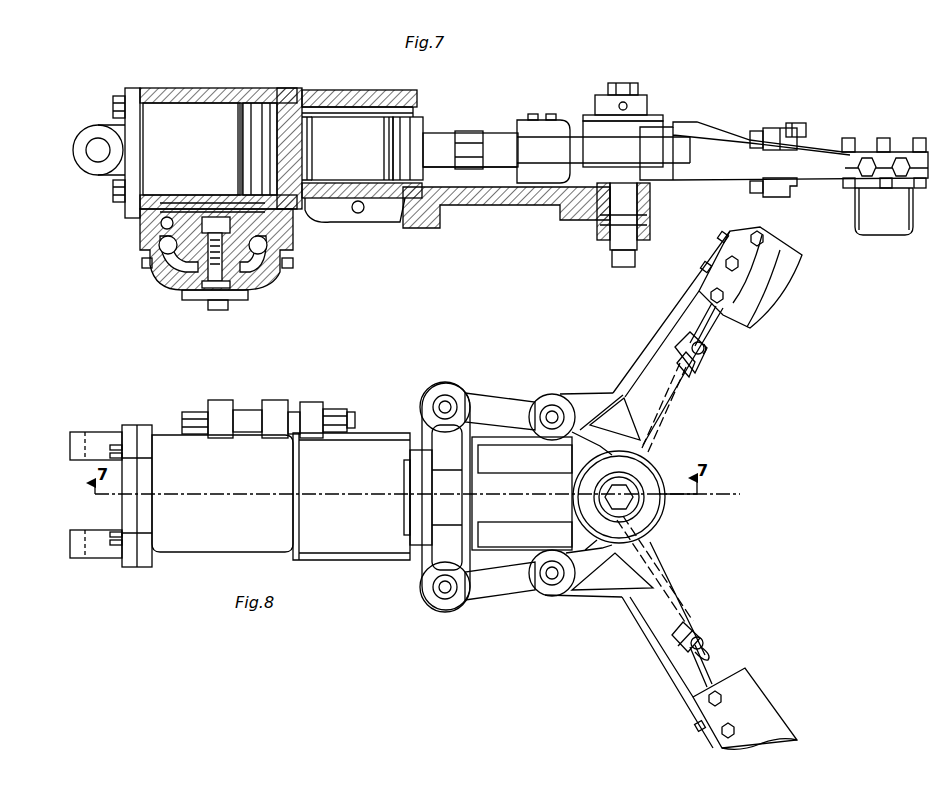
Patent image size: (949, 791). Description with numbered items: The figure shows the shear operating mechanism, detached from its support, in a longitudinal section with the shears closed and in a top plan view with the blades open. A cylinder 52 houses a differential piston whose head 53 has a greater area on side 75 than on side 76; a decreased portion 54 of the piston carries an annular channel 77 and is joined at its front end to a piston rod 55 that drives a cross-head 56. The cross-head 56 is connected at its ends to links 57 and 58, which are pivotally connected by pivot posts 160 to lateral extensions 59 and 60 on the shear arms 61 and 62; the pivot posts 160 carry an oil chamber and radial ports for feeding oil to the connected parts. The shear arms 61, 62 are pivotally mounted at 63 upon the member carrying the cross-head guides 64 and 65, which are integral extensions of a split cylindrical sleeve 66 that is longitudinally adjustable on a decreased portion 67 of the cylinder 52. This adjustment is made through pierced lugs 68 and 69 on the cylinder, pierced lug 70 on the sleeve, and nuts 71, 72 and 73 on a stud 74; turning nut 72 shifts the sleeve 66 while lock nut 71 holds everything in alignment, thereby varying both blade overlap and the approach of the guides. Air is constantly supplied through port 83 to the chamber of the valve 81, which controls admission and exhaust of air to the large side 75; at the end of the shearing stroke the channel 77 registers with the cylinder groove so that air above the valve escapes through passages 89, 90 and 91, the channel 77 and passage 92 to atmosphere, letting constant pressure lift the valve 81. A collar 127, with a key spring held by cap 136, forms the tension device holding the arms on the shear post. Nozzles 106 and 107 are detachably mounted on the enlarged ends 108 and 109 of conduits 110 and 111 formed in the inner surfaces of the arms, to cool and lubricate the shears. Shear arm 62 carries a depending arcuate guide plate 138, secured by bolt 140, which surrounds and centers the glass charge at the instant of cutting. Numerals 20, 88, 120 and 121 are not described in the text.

In FIG. 7, the eye / mounting lug 20 is at (90, 170).
In FIG. 8, the eye / mounting lug 20 is at (100, 537).
In FIG. 7, the cylinder 52 is at (190, 115).
In FIG. 8, the cylinder 52 is at (205, 538).
In FIG. 7, the piston head 53 is at (258, 112).
In FIG. 7, the decreased portion of the piston 54 is at (370, 140).
In FIG. 7, the piston rod 55 is at (450, 138).
In FIG. 7, the cross-head 56 is at (522, 118).
In FIG. 8, the cross-head 56 is at (418, 548).
In FIG. 8, the link 57 is at (502, 395).
In FIG. 8, the link 58 is at (500, 600).
In FIG. 8, the lateral extension 59 is at (580, 398).
In FIG. 8, the lateral extension 60 is at (585, 600).
In FIG. 8, the shear arm 61 is at (665, 333).
In FIG. 7, the shear arm 62 is at (735, 165).
In FIG. 8, the shear arm 62 is at (660, 655).
In FIG. 8, the pivot 63 is at (635, 497).
In FIG. 7, the cross-head guide 64 is at (470, 172).
In FIG. 8, the cross-head guide 64 is at (497, 458).
In FIG. 8, the cross-head guide 65 is at (560, 535).
In FIG. 7, the cylindrical sleeve 66 is at (365, 90).
In FIG. 8, the cylindrical sleeve 66 is at (300, 540).
In FIG. 7, the decreased portion of the cylinder 67 is at (378, 198).
In FIG. 8, the pierced lug 68 is at (220, 410).
In FIG. 8, the pierced lug 69 is at (278, 410).
In FIG. 8, the pierced lug 70 is at (312, 410).
In FIG. 8, the nut 71 is at (190, 412).
In FIG. 8, the nut 72 is at (250, 410).
In FIG. 8, the nut 73 is at (340, 412).
In FIG. 8, the stud 74 is at (355, 420).
In FIG. 7, the side of the piston head 75 is at (238, 120).
In FIG. 7, the side of the piston head 76 is at (298, 112).
In FIG. 7, the annular channel 77 is at (318, 160).
In FIG. 7, the valve 81 is at (190, 270).
In FIG. 7, the port 83 is at (268, 246).
In FIG. 7, the check valve chamber 88 is at (158, 230).
In FIG. 7, the passage 89 is at (215, 203).
In FIG. 7, the passage 90 is at (250, 208).
In FIG. 7, the passage 91 is at (305, 185).
In FIG. 7, the passage 92 is at (405, 100).
In FIG. 7, the nozzle 106 is at (800, 125).
In FIG. 8, the nozzle 106 is at (706, 348).
In FIG. 7, the nozzle 107 is at (788, 145).
In FIG. 8, the nozzle 107 is at (710, 646).
In FIG. 8, the enlarged end of conduit 108 is at (697, 370).
In FIG. 8, the enlarged end of conduit 109 is at (693, 635).
In FIG. 8, the conduit 110 is at (674, 428).
In FIG. 8, the conduit 111 is at (666, 575).
In FIG. 8, the blade 120 is at (760, 262).
In FIG. 8, the blade 121 is at (740, 708).
In FIG. 7, the collar 127 is at (640, 100).
In FIG. 7, the cap 136 is at (622, 83).
In FIG. 7, the arcuate plate 138 is at (880, 220).
In FIG. 7, the bolt 140 is at (900, 158).
In FIG. 7, the pivot post 160 is at (545, 114).
In FIG. 8, the pivot post 160 is at (444, 404).